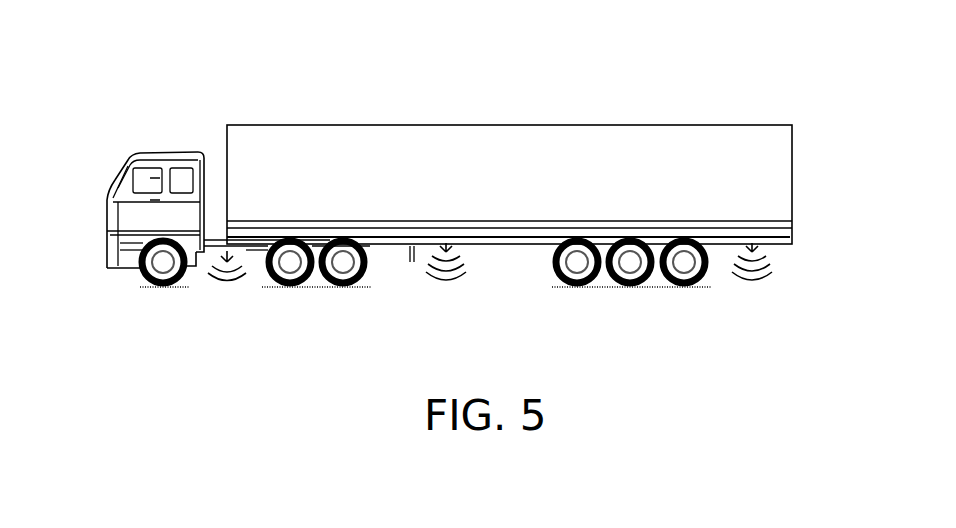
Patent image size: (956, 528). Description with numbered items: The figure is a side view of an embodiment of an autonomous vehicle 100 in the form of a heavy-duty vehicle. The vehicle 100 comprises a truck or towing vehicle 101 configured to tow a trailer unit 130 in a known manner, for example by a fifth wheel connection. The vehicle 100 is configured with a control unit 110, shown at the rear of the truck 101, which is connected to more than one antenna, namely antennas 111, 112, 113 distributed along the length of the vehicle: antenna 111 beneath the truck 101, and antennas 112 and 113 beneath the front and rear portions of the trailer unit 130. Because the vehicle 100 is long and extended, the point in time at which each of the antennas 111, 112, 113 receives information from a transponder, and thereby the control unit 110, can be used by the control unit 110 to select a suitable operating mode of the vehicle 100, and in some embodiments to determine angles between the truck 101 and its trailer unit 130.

The autonomous vehicle 100 is at (138, 68).
The truck 101 is at (137, 141).
The control unit 110 is at (225, 252).
The antenna 111 is at (247, 262).
The antenna 112 is at (446, 250).
The antenna 113 is at (752, 250).
The trailer unit 130 is at (388, 111).